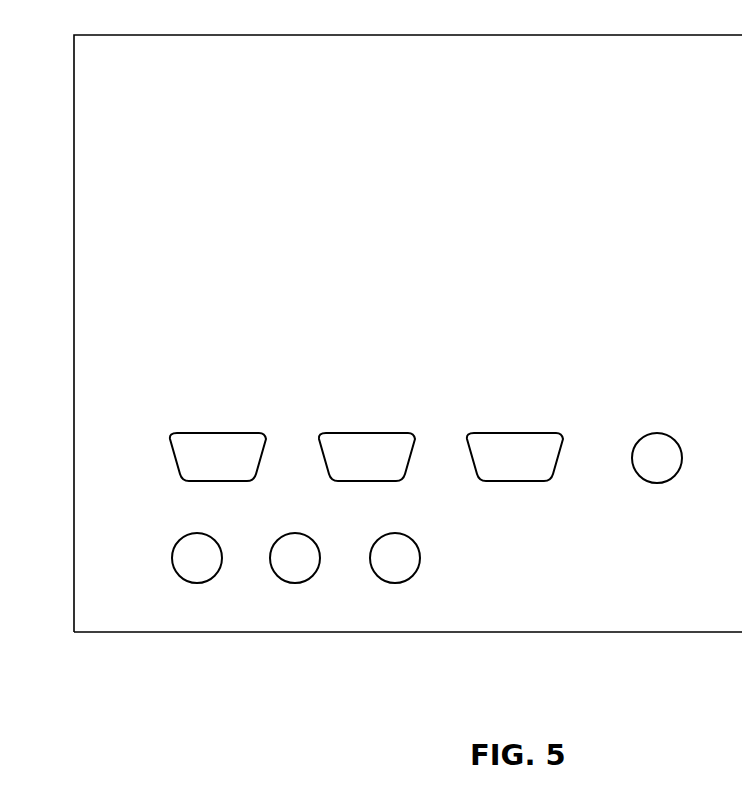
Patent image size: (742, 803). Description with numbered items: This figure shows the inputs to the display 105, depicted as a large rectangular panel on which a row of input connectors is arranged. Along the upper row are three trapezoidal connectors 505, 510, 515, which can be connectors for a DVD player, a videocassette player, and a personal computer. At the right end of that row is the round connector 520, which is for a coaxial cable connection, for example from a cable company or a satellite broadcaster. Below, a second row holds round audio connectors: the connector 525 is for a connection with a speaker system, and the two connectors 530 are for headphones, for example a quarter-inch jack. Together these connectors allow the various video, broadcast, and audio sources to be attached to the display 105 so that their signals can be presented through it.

The display 105 is at (115, 35).
The connector 505 is at (211, 433).
The connector 510 is at (359, 433).
The connector 515 is at (507, 433).
The connector 520 is at (657, 433).
The connector 525 is at (195, 533).
The connector 530 is at (395, 533).